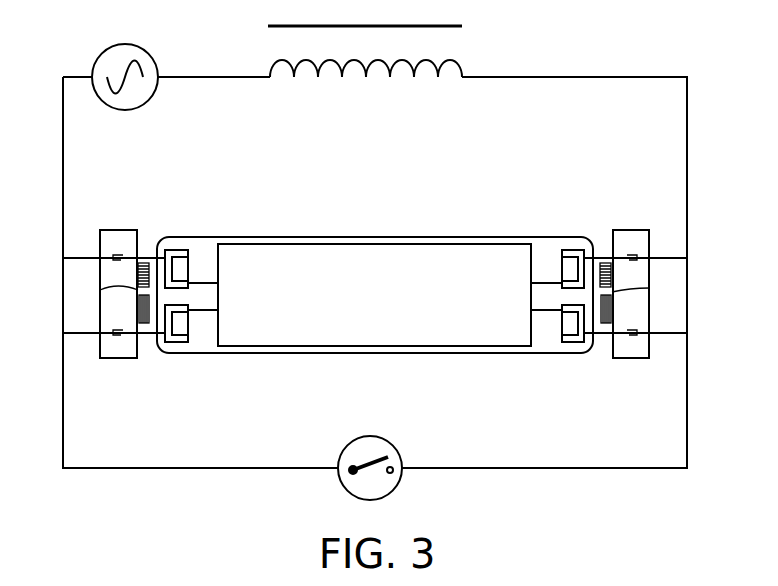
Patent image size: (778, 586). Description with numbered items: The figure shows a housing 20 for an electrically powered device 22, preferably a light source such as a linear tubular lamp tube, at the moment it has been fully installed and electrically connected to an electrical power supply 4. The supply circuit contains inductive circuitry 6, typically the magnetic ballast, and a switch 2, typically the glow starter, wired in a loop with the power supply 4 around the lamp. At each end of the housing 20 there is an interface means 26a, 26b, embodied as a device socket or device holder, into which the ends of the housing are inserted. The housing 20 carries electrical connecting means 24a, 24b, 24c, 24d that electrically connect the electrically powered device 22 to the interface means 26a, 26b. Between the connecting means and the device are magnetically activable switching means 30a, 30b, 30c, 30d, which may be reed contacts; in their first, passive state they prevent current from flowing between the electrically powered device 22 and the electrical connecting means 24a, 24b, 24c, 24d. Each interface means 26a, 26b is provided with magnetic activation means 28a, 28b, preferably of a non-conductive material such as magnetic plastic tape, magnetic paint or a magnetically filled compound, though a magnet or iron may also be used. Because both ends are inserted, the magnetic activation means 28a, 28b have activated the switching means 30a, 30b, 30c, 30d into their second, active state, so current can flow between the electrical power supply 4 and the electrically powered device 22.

The switch 2 is at (398, 458).
The electrical power supply 4 is at (155, 95).
The inductive circuitry 6 is at (270, 55).
The housing 20 is at (381, 235).
The electrically powered device 22 is at (381, 348).
The electrical connecting means 24a is at (148, 262).
The electrical connecting means 24b is at (148, 335).
The electrical connecting means 24c is at (598, 262).
The electrical connecting means 24d is at (600, 335).
The interface means 26a is at (112, 233).
The interface means 26b is at (637, 355).
The magnetic activation means 28a is at (100, 290).
The magnetic activation means 28b is at (649, 288).
The magnetically activable switching means 30a is at (175, 250).
The magnetically activable switching means 30b is at (176, 355).
The magnetically activable switching means 30c is at (573, 250).
The magnetically activable switching means 30d is at (573, 355).